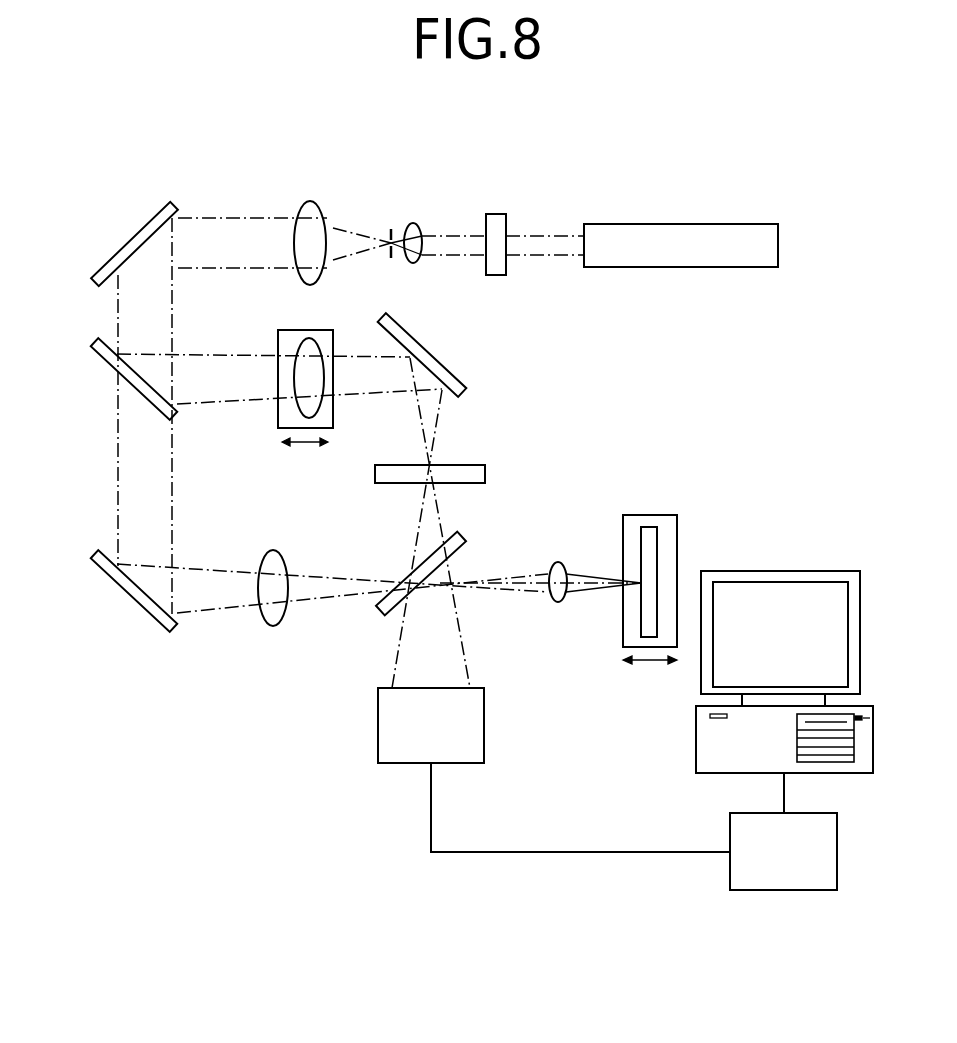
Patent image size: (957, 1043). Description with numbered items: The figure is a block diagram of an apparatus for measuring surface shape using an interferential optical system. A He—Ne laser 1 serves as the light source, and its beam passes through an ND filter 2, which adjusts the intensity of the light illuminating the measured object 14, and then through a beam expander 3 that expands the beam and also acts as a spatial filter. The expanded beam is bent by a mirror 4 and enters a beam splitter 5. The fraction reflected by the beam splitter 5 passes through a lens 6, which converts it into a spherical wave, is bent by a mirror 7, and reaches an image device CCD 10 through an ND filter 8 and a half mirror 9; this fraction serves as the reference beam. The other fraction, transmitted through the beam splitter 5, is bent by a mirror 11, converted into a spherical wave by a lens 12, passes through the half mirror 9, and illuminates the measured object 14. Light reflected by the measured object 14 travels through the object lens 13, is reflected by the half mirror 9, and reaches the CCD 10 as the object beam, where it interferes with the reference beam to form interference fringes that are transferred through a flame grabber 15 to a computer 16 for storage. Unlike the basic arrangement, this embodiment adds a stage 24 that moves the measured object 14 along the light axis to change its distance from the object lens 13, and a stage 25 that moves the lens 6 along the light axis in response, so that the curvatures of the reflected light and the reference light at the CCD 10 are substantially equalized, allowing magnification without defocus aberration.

The He—Ne laser 1 is at (680, 224).
The ND filter 2 is at (488, 213).
The beam expander 3 is at (297, 203).
The mirror 4 is at (106, 248).
The beam splitter 5 is at (132, 396).
The lens 6 is at (278, 420).
The mirror 7 is at (428, 348).
The ND filter 8 is at (485, 474).
The half mirror 9 is at (385, 614).
The CCD 10 is at (378, 727).
The mirror 11 is at (130, 598).
The lens 12 is at (266, 555).
The object lens 13 is at (558, 600).
The measured object 14 is at (648, 527).
The flame grabber 15 is at (783, 891).
The computer 16 is at (778, 571).
The stage 24 is at (669, 535).
The stage 25 is at (320, 330).